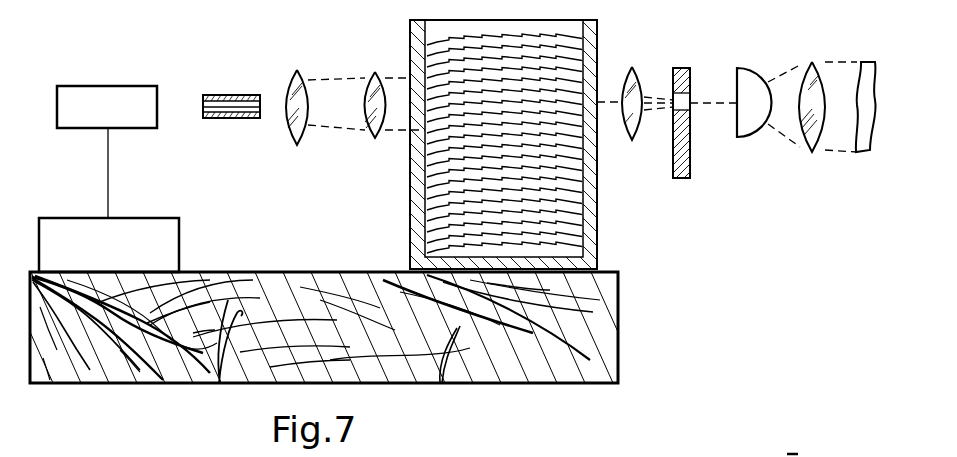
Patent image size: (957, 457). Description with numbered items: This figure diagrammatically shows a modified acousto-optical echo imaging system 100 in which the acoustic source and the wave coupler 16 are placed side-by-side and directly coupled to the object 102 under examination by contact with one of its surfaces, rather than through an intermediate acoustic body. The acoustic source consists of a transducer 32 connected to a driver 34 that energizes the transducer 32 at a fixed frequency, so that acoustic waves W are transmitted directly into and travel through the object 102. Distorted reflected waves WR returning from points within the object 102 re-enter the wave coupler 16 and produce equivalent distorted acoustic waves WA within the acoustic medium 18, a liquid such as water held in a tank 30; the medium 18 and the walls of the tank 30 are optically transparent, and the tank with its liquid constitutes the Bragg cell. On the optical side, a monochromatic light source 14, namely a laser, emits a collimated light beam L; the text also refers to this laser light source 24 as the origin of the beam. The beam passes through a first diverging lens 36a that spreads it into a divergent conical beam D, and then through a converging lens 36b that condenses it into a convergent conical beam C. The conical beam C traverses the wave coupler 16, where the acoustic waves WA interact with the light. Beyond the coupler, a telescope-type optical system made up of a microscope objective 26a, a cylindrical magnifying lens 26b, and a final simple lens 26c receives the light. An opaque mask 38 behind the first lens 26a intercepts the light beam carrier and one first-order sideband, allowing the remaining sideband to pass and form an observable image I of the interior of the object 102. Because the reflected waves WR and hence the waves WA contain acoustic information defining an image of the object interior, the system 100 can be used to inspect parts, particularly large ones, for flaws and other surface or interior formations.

The acousto-optical imaging system 100 is at (244, 14).
The monochromatic light source 14 is at (223, 95).
The collimated light beam L is at (263, 105).
The first diverging lens 36a is at (298, 144).
The converging lens 36b is at (375, 138).
The laser light source 24 is at (333, 128).
The divergent conical beam D is at (340, 80).
The convergent conical beam C is at (393, 78).
The wave coupler 16 is at (383, 28).
The acoustic wave transmission medium 18 is at (567, 72).
The distorted acoustic waves in the acoustic medium WA is at (567, 50).
The tank 30 is at (597, 210).
The microscope objective 26a is at (633, 68).
The opaque mask 38 is at (683, 68).
The cylindrical magnifying lens 26b is at (740, 68).
The final simple lens 26c is at (818, 62).
The observable image I is at (858, 31).
The driver 34 is at (107, 152).
The transducer 32 is at (109, 245).
The object under examination 102 is at (130, 370).
The acoustic waves W is at (220, 383).
The distorted reflected acoustic waves WR is at (440, 383).